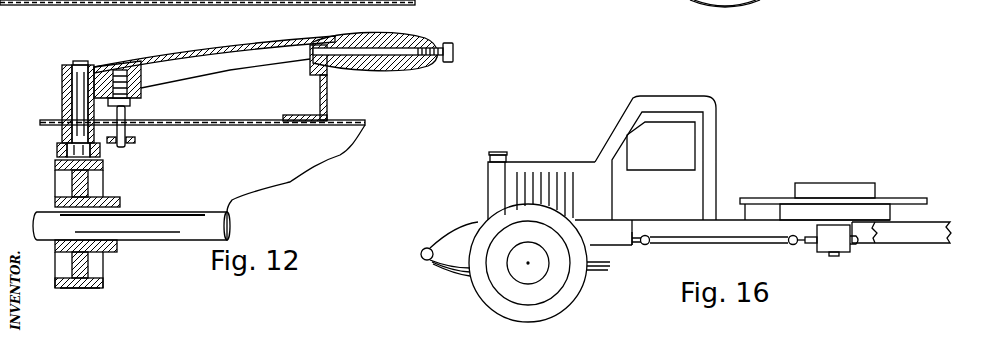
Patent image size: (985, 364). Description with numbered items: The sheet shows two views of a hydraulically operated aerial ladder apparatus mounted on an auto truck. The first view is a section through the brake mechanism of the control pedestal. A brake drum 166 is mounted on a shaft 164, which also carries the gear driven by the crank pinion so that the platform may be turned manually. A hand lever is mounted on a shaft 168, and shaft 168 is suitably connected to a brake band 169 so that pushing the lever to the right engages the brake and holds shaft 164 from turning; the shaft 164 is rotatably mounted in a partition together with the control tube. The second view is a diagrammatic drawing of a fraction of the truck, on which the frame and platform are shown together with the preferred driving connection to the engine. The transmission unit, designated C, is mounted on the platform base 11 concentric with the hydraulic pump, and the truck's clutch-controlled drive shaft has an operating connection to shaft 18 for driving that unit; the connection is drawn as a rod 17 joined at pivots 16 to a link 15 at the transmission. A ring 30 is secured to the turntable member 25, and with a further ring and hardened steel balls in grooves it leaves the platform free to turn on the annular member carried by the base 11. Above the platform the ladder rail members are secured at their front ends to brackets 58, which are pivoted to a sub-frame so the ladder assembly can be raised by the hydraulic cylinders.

In FIG. 12, the shaft 168 is at (79, 63).
In FIG. 12, the shaft 164 is at (148, 242).
In FIG. 12, the brake drum 166 is at (104, 270).
In FIG. 12, the brake band 169 is at (80, 302).
In FIG. 16, the platform base 11 is at (902, 245).
In FIG. 16, the control unit 15 is at (802, 244).
In FIG. 16, the pivot connections 16 is at (645, 246).
In FIG. 16, the connecting rod 17 is at (702, 243).
In FIG. 16, the shaft 18 is at (638, 247).
In FIG. 16, the member 25 is at (905, 197).
In FIG. 16, the ring 30 is at (893, 208).
In FIG. 16, the brackets 58 is at (850, 192).